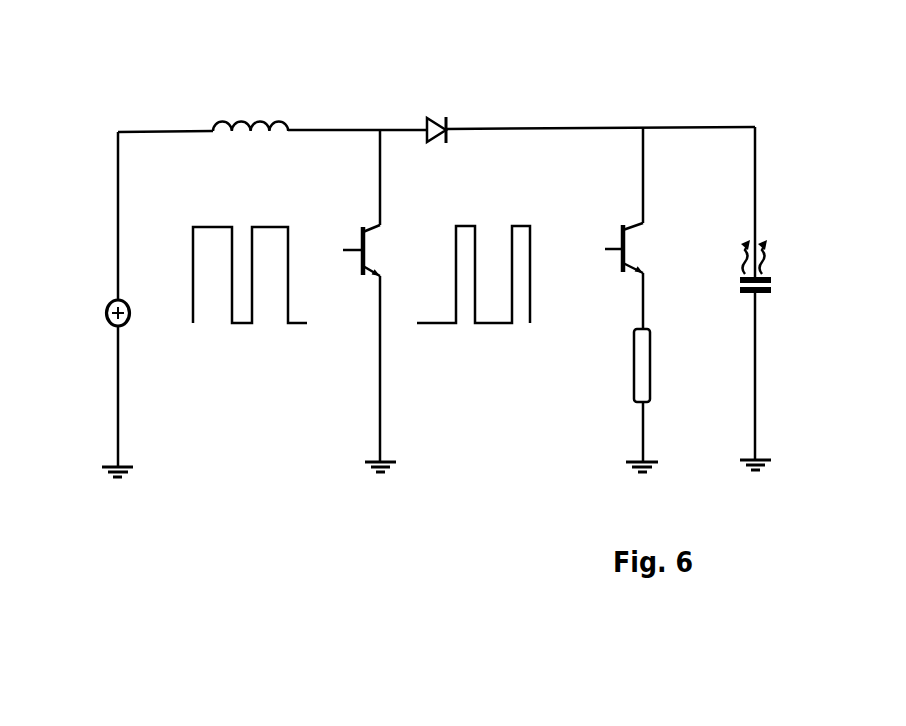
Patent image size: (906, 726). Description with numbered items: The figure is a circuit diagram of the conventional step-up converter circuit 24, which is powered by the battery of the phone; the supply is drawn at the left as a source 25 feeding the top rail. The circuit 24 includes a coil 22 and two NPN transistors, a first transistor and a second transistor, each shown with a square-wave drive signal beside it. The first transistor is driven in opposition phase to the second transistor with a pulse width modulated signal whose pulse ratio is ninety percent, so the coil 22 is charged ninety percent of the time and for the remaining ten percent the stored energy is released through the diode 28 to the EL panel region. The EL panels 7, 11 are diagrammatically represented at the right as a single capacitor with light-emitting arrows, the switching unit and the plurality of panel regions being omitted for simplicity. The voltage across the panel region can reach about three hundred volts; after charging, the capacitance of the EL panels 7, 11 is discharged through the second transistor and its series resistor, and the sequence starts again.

The coil 22 is at (245, 118).
The diode 28 is at (437, 118).
The voltage source 25 is at (108, 303).
The EL panel 7 is at (806, 298).
The EL panel 11 is at (776, 266).
The step-up converter circuit 24 is at (513, 530).